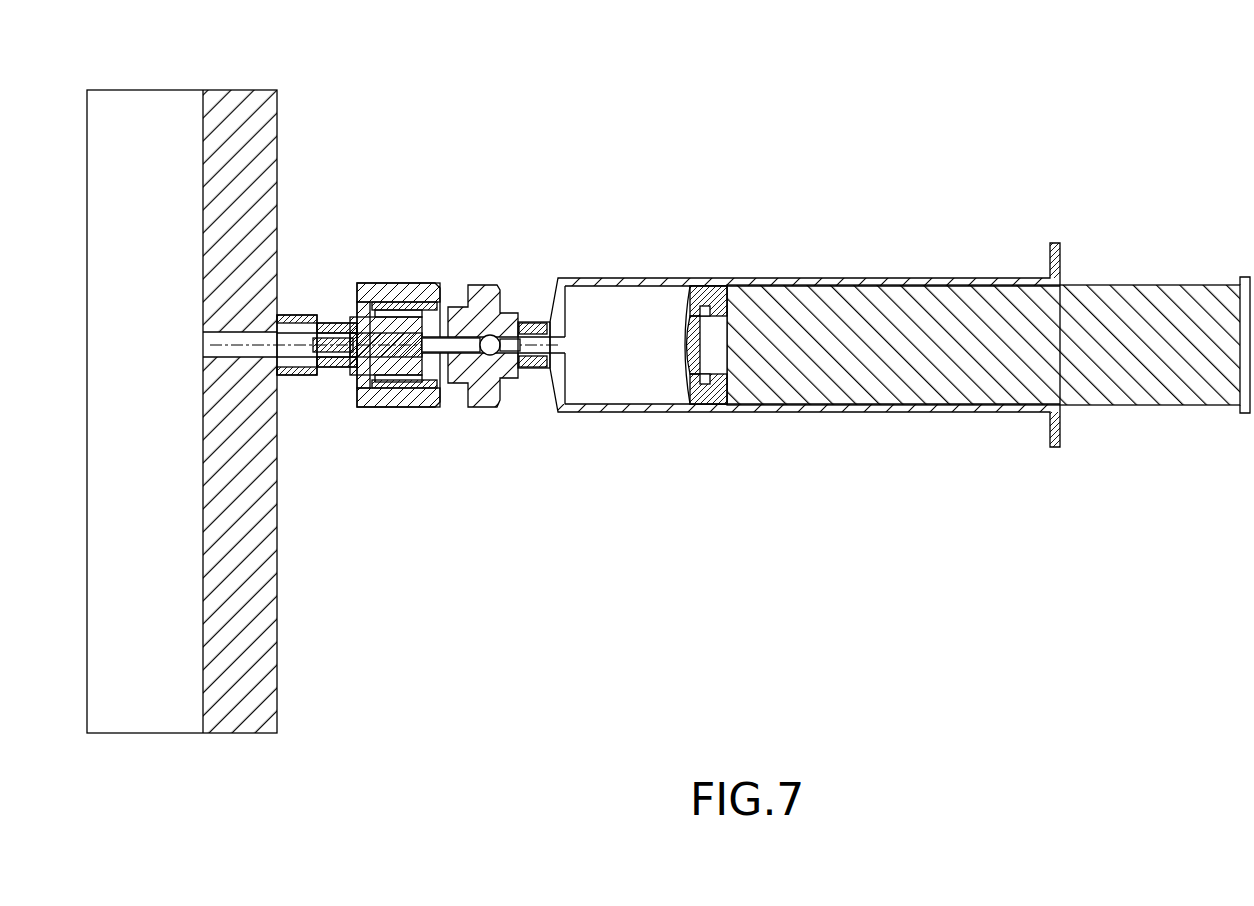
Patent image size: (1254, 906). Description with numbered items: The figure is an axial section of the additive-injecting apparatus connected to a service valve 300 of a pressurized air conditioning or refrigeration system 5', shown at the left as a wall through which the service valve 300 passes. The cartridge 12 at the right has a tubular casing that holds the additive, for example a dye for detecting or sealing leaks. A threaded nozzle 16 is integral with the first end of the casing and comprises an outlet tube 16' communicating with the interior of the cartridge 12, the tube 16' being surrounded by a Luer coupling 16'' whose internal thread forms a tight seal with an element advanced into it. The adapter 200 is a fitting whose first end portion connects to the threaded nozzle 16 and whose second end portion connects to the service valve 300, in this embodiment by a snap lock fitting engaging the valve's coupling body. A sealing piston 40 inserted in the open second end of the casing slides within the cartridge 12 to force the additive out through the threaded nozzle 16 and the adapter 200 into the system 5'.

The pressurized air conditioning or refrigeration system 5' is at (323, 367).
The service valve 300 is at (307, 315).
The adapter 200 is at (383, 430).
The Luer coupling 16'' is at (482, 203).
The outlet tube 16' is at (553, 466).
The threaded nozzle 16 is at (547, 238).
The cartridge 12 is at (833, 225).
The sealing piston 40 is at (1160, 410).